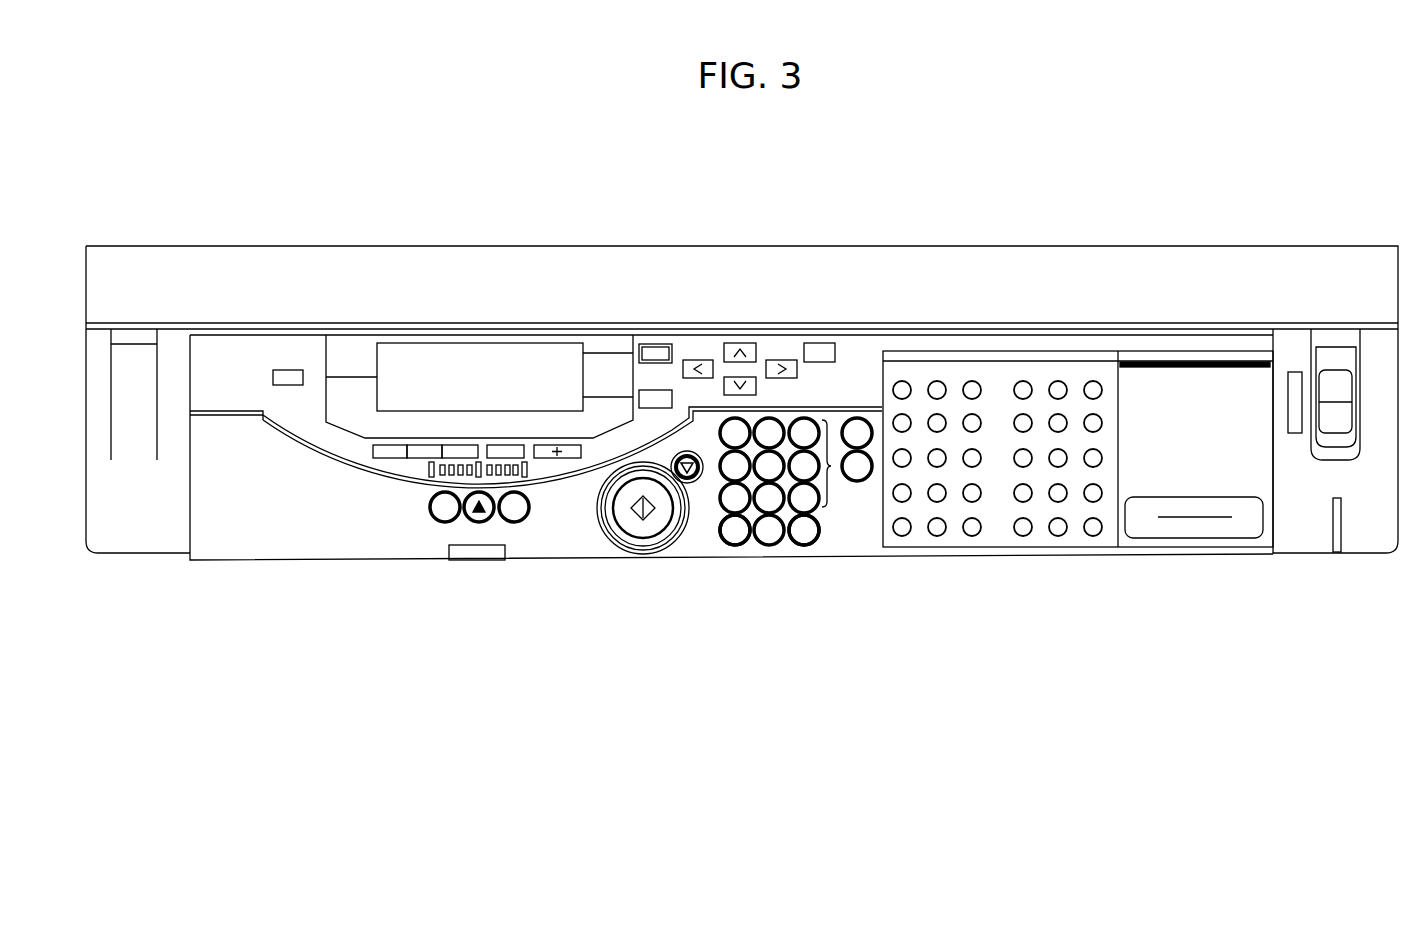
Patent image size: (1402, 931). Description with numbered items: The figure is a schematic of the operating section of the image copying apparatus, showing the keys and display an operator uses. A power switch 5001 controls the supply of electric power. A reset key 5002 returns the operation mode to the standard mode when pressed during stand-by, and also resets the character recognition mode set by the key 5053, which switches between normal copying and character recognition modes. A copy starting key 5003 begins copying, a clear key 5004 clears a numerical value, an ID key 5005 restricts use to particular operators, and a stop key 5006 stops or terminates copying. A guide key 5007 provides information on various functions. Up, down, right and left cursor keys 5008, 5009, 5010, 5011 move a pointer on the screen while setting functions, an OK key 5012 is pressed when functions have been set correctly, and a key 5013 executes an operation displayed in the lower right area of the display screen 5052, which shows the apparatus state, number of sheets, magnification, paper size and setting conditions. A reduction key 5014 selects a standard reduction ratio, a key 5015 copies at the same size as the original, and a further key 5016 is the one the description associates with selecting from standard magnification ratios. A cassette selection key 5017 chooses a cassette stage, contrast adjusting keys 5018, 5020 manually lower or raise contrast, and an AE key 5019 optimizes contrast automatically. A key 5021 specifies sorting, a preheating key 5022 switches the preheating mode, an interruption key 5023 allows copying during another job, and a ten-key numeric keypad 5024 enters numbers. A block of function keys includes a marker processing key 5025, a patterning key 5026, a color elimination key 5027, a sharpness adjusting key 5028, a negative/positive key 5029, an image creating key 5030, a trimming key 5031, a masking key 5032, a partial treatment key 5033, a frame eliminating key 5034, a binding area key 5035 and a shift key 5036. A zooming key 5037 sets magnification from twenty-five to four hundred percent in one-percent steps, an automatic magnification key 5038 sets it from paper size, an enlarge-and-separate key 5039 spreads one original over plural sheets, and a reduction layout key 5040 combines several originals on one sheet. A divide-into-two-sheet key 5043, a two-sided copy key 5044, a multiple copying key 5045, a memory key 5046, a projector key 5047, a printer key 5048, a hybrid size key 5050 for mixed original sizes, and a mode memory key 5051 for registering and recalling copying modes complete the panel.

The power switch 5001 is at (1338, 410).
The reset key 5002 is at (565, 460).
The copy starting key 5003 is at (653, 540).
The clear key 5004 is at (743, 546).
The ID key 5005 is at (807, 546).
The stop key 5006 is at (700, 480).
The guide key 5007 is at (832, 343).
The up cursor key 5008 is at (738, 343).
The down cursor key 5009 is at (757, 377).
The right cursor key 5010 is at (787, 360).
The left cursor key 5011 is at (698, 360).
The OK key 5012 is at (652, 344).
The execution key 5013 is at (639, 395).
The reduction key 5014 is at (375, 458).
The same-size copy key 5015 is at (417, 458).
The function key 5016 is at (442, 467).
The cassette selection key 5017 is at (527, 473).
The contrast adjusting key 5018 is at (445, 523).
The AE key 5019 is at (479, 523).
The contrast adjusting key 5020 is at (514, 523).
The sorting key 5021 is at (298, 370).
The preheating key 5022 is at (862, 418).
The interruption key 5023 is at (858, 482).
The ten-key numeric keypad 5024 is at (832, 468).
The display screen 5052 is at (465, 343).
The marker processing key 5025 is at (902, 385).
The patterning key 5026 is at (937, 385).
The color elimination key 5027 is at (972, 385).
The sharpness adjusting key 5028 is at (1023, 385).
The negative/positive key 5029 is at (1058, 385).
The image creating key 5030 is at (1093, 385).
The trimming key 5031 is at (902, 418).
The masking key 5032 is at (937, 418).
The partial treatment key 5033 is at (972, 418).
The frame eliminating key 5034 is at (1023, 418).
The binding area key 5035 is at (1058, 418).
The shift key 5036 is at (1093, 418).
The zooming key 5037 is at (902, 453).
The automatic magnification key 5038 is at (937, 453).
The enlarge-and-separate key 5039 is at (972, 453).
The reduction layout key 5040 is at (1023, 453).
The divide-into-two-sheet key 5043 is at (902, 488).
The two-sided copy key 5044 is at (937, 488).
The multiple copying key 5045 is at (972, 488).
The memory key 5046 is at (1023, 488).
The projector key 5047 is at (1058, 488).
The printer key 5048 is at (1093, 488).
The hybrid size key 5050 is at (937, 522).
The mode memory key 5051 is at (972, 522).
The mode switching key 5053 is at (1023, 522).